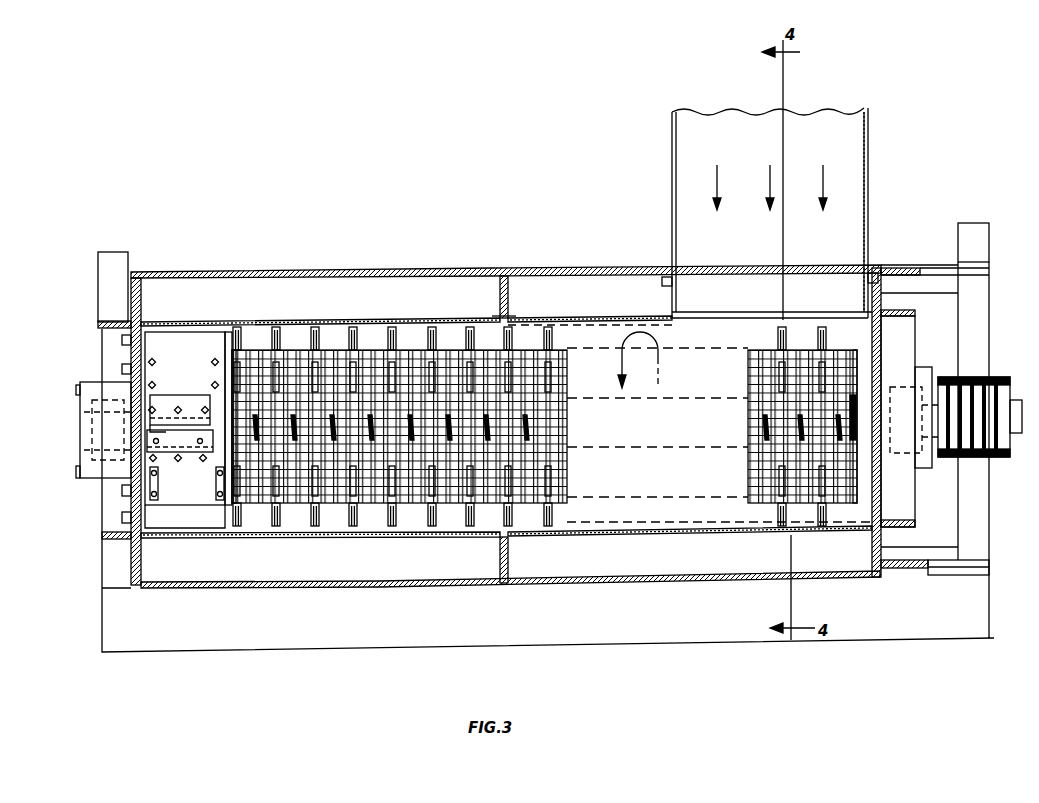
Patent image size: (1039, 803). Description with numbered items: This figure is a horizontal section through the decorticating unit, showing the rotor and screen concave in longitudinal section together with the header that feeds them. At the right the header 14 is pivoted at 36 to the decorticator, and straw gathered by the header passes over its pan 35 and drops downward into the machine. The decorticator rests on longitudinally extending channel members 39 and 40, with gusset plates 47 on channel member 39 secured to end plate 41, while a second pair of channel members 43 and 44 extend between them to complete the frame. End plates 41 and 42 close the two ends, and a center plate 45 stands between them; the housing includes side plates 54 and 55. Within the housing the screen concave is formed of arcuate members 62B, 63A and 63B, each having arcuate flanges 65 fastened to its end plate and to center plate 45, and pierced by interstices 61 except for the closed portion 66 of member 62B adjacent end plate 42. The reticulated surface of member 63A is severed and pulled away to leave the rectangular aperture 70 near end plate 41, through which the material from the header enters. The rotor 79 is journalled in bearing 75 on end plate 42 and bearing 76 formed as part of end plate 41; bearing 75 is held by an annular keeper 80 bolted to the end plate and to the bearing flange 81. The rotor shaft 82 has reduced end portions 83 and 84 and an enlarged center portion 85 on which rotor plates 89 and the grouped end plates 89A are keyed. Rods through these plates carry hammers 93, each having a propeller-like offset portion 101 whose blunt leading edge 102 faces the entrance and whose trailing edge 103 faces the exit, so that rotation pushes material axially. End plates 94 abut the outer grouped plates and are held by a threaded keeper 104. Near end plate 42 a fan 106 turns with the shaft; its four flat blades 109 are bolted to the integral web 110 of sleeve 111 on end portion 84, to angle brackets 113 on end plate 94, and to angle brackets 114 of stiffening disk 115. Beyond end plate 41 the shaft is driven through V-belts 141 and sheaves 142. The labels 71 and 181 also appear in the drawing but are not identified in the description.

The header 14 is at (872, 154).
The pan 35 is at (836, 243).
The pivot 36 is at (670, 280).
The channel member 39 is at (975, 522).
The channel member 40 is at (98, 268).
The end plate 41 is at (900, 345).
The end plate 42 is at (101, 325).
The channel member 43 is at (934, 258).
The channel member 44 is at (944, 548).
The center plate 45 is at (508, 290).
The gusset plates 47 is at (910, 270).
The side plate 54 is at (598, 583).
The second side plate 55 is at (590, 270).
The interstices 61 is at (318, 350).
The arcuate member 62B is at (335, 537).
The arcuate member 63A is at (605, 318).
The arcuate member 63B is at (650, 534).
The arcuate flanges 65 is at (141, 305).
The closed portion 66 is at (190, 540).
The rectangular aperture 70 is at (710, 316).
The upper inner plate 71 is at (190, 322).
The bearing 75 is at (108, 478).
The bearing 76 is at (928, 367).
The rotor 79 is at (410, 348).
The annular keeper 80 is at (135, 350).
The flange of bearing 81 is at (141, 355).
The shaft 82 is at (690, 398).
The end portion 83 is at (1016, 433).
The end portion 84 is at (182, 380).
The center portion of enlarged diameter 85 is at (665, 450).
The rotor plates 89 is at (272, 350).
The grouped plates 89A is at (238, 503).
The hammers 93 is at (353, 345).
The end plate 94 is at (225, 483).
The offset portion 101 is at (567, 517).
The leading edge 102 is at (388, 345).
The trailing edge 103 is at (400, 352).
The keeper 104 is at (215, 458).
The fan 106 is at (210, 328).
The flat blades 109 is at (190, 340).
The integral web 110 is at (160, 400).
The sleeve 111 is at (190, 448).
The angle brackets 113 is at (218, 500).
The angle brackets 114 is at (160, 500).
The stiffening disk 115 is at (122, 500).
The V-belts 141 is at (985, 380).
The sheaves 142 is at (1003, 380).
The bearing 181 is at (80, 420).